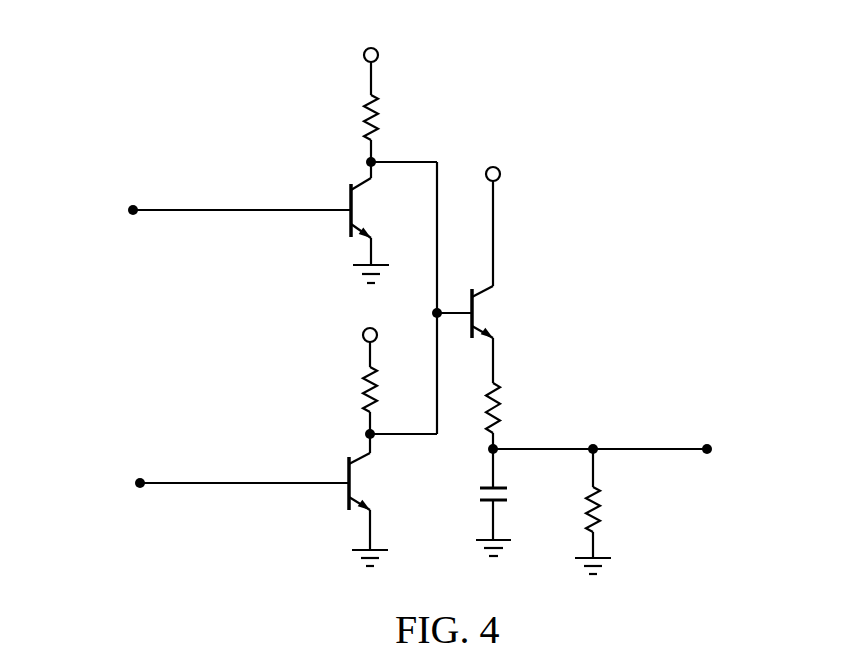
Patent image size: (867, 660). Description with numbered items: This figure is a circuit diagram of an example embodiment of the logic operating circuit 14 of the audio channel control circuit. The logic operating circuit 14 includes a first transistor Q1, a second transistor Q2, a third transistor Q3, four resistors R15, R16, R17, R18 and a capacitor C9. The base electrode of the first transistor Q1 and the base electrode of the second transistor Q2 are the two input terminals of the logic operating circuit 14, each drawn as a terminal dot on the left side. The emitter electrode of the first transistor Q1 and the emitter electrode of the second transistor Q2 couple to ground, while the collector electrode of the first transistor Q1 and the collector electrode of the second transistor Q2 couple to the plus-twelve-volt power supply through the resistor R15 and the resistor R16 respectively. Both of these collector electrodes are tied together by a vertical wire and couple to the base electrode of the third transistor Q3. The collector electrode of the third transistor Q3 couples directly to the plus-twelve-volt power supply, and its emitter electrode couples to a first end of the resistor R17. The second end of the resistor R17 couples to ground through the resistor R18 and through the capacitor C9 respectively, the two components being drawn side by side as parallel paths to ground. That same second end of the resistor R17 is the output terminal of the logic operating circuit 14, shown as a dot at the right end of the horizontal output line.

The logic operating circuit 14 is at (466, 31).
The resistor R15 is at (348, 94).
The resistor R16 is at (338, 381).
The resistor R17 is at (519, 416).
The resistor R18 is at (612, 511).
The first transistor Q1 is at (375, 222).
The second transistor Q2 is at (384, 500).
The third transistor Q3 is at (481, 259).
The capacitor C9 is at (518, 502).